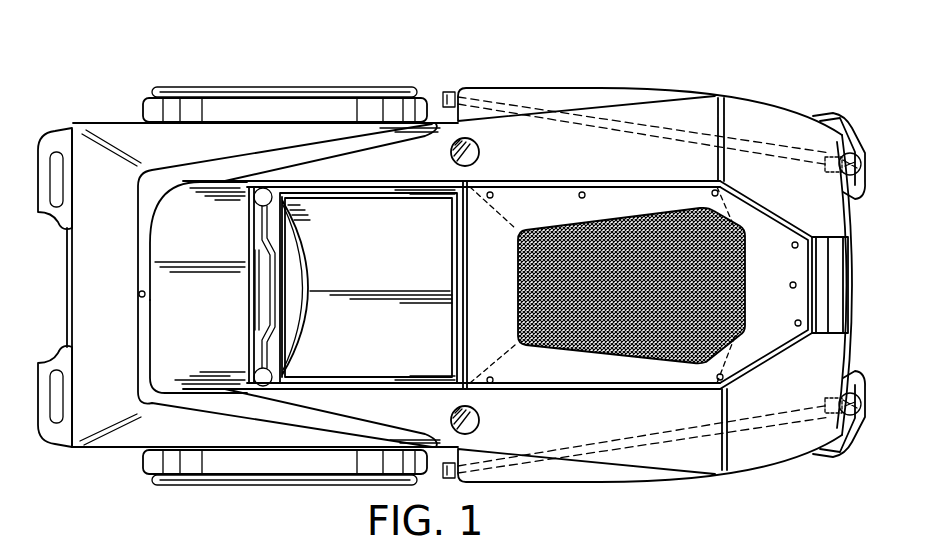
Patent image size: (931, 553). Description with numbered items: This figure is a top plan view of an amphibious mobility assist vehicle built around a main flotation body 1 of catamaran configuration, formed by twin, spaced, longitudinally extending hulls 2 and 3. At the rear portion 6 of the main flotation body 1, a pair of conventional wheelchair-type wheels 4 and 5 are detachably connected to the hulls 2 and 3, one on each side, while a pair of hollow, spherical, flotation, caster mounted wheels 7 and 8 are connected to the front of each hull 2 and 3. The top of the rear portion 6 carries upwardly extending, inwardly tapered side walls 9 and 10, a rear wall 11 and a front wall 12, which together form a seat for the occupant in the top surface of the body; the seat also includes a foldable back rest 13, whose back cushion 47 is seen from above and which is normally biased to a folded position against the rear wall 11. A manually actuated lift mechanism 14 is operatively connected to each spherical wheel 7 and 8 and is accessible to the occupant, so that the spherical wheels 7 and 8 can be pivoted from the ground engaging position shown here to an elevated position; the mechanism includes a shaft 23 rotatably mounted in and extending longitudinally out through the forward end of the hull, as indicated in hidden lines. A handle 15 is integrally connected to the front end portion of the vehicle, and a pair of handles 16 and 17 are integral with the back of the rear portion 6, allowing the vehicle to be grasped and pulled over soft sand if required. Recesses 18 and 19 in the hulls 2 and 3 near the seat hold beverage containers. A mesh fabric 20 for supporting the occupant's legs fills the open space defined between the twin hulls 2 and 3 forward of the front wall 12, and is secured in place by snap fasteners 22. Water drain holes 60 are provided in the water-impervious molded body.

The main flotation body 1 is at (262, 64).
The hull 2 is at (685, 115).
The hull 3 is at (672, 453).
The wheelchair-type wheel 4 is at (305, 107).
The wheelchair-type wheel 5 is at (327, 465).
The rear portion 6 is at (128, 143).
The spherical caster mounted wheel 7 is at (82, 175).
The spherical caster mounted wheel 8 is at (125, 103).
The side wall 9 is at (195, 180).
The side wall 10 is at (192, 382).
The rear wall 11 is at (143, 248).
The front wall 12 is at (393, 242).
The foldable back rest 13 is at (318, 252).
The lift mechanism 14 is at (446, 86).
The handle 15 is at (857, 303).
The handle 16 is at (42, 193).
The handle 17 is at (43, 412).
The recess 18 is at (480, 148).
The recess 19 is at (482, 418).
The mesh fabric 20 is at (597, 225).
The snap fasteners 22 is at (494, 197).
The shaft 23 is at (748, 143).
The back cushion 47 is at (307, 312).
The water drain holes 60 is at (255, 297).